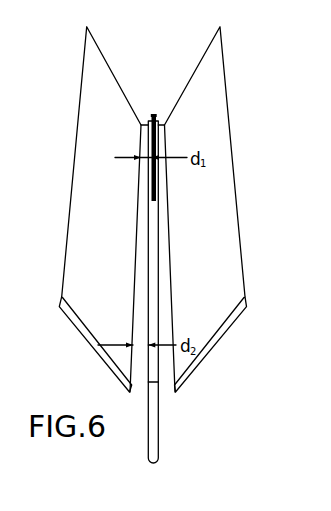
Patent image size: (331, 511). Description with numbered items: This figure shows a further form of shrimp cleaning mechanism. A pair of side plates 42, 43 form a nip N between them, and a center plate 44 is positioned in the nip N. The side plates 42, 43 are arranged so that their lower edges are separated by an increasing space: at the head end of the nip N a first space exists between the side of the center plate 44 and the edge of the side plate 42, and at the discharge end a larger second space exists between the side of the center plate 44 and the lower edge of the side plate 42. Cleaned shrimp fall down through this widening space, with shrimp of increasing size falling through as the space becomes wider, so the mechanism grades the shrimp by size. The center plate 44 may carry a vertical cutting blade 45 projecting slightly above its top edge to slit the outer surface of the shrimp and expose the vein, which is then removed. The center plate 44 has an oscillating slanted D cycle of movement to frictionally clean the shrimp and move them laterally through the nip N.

The side plate 42 is at (62, 266).
The side plate 43 is at (235, 283).
The center plate 44 is at (154, 427).
The vertical cutting blade 45 is at (154, 115).
The nip N is at (162, 280).